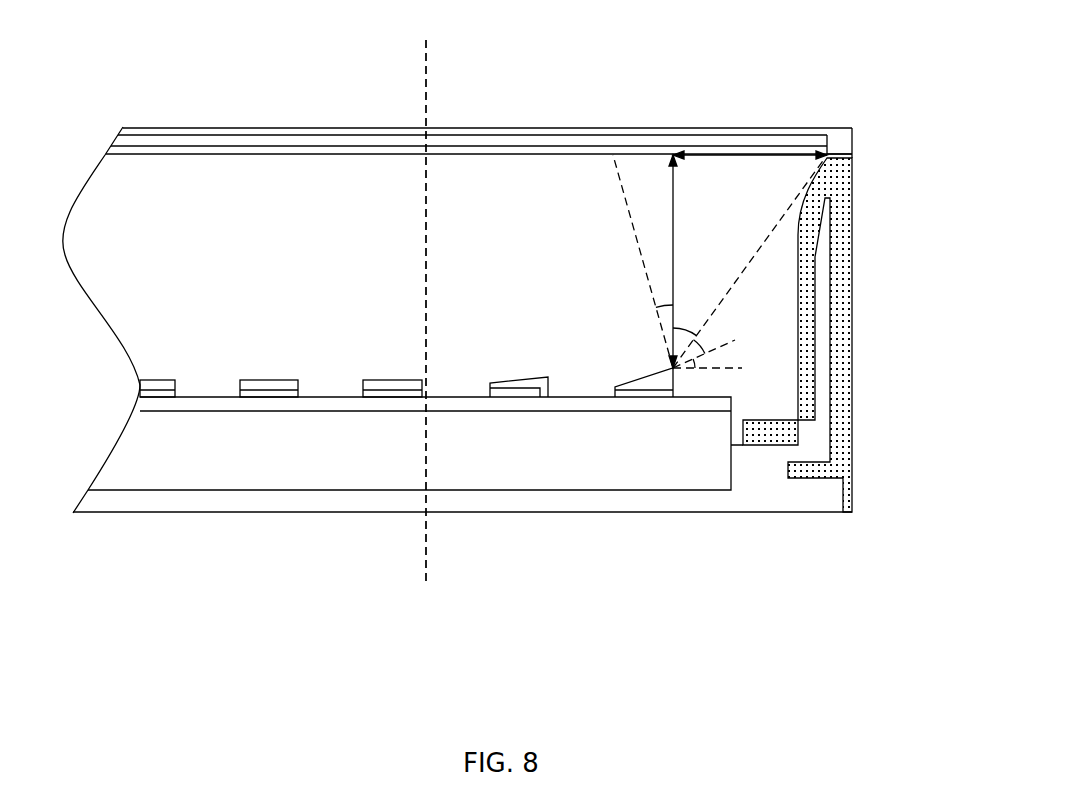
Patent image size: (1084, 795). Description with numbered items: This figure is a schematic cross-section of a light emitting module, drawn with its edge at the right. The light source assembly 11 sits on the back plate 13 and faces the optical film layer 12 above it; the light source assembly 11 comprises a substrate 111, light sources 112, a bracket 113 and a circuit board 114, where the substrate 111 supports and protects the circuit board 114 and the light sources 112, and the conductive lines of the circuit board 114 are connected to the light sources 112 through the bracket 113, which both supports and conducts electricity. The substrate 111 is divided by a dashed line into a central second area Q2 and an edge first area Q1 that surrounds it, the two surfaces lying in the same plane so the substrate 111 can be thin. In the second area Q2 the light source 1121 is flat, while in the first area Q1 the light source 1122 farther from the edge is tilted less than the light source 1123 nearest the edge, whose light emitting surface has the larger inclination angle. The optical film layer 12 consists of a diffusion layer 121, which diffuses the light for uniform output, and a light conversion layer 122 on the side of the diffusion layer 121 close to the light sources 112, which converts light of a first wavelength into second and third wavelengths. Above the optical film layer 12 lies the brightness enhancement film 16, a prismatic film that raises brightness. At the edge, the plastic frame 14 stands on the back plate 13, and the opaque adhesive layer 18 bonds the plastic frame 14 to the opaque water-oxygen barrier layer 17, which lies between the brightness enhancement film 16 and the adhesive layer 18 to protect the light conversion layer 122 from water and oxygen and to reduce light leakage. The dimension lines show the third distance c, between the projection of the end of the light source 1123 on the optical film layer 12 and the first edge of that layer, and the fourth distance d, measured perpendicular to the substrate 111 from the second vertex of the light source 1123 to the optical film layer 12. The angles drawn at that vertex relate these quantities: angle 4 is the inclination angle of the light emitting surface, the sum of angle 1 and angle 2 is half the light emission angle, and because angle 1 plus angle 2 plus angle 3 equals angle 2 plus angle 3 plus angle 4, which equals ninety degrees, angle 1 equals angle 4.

The light source assembly 11 is at (705, 588).
The substrate 111 is at (706, 482).
The light sources 112 is at (406, 443).
The light source 1121 is at (380, 378).
The light source 1122 is at (540, 398).
The light source 1123 is at (630, 388).
The bracket 113 is at (627, 398).
The circuit board 114 is at (668, 398).
The optical film layer 12 is at (740, 42).
The diffusion layer 121 is at (737, 140).
The light conversion layer 122 is at (577, 152).
The back plate 13 is at (795, 514).
The plastic frame 14 is at (852, 225).
The brightness enhancement film 16 is at (501, 131).
The water-oxygen barrier layer 17 is at (852, 140).
The adhesive layer 18 is at (852, 158).
The angle 1 is at (643, 261).
The angle 2 is at (749, 263).
The angle 3 is at (704, 349).
The angle 4 is at (707, 363).
The third distance c is at (750, 163).
The fourth distance d is at (679, 261).
The first area Q1 is at (448, 311).
The second area Q2 is at (402, 311).